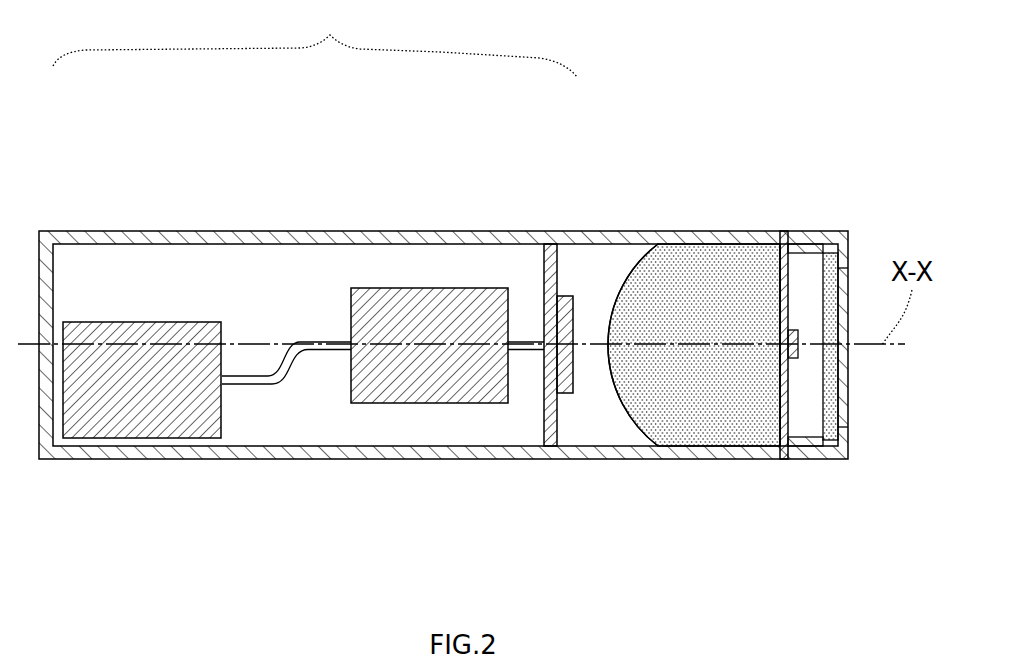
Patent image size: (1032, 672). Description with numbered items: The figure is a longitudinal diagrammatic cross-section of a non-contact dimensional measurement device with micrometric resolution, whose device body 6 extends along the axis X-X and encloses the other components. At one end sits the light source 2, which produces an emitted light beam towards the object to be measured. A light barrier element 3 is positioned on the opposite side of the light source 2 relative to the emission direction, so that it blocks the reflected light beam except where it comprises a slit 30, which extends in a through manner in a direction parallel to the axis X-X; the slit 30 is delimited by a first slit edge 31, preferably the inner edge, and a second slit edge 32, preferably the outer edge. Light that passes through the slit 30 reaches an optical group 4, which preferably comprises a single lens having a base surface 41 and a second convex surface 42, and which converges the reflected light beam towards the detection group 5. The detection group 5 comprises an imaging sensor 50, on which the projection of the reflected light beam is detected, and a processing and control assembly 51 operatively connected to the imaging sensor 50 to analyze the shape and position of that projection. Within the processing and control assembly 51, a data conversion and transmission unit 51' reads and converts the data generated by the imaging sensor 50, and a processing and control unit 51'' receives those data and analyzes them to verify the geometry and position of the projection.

The light source 2 is at (804, 355).
The light barrier element 3 is at (785, 236).
The optical group 4 is at (615, 275).
The detection group 5 is at (315, 40).
The device body 6 is at (259, 450).
The slit 30 is at (788, 292).
The first slit edge 31 is at (787, 390).
The second slit edge 32 is at (787, 405).
The base surface 41 is at (767, 250).
The second convex surface 42 is at (628, 412).
The imaging sensor 50 is at (547, 292).
The processing and control assembly 51 is at (383, 228).
The data conversion and transmission unit 51' is at (407, 254).
The processing and control unit 51'' is at (142, 281).